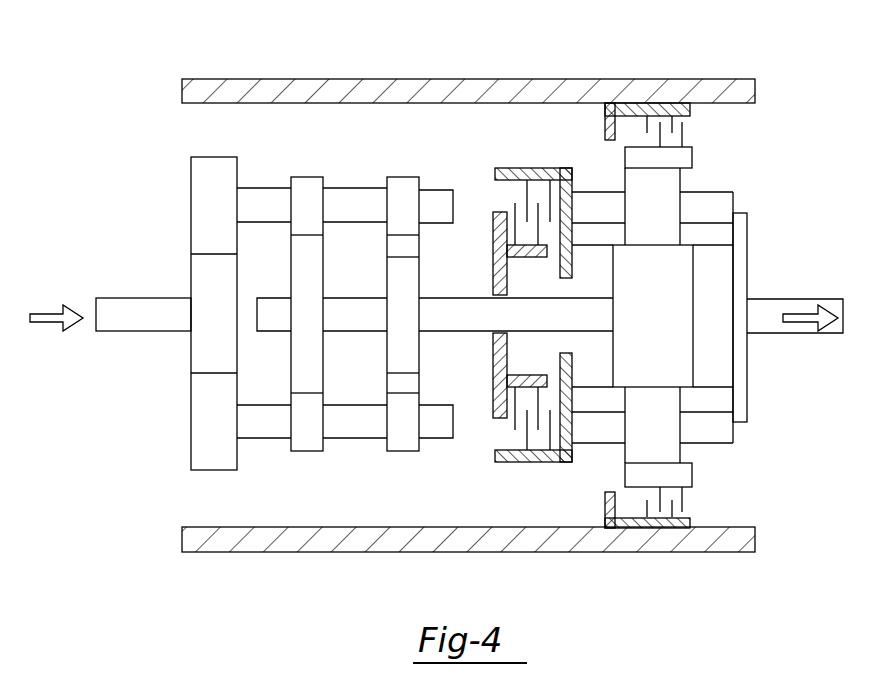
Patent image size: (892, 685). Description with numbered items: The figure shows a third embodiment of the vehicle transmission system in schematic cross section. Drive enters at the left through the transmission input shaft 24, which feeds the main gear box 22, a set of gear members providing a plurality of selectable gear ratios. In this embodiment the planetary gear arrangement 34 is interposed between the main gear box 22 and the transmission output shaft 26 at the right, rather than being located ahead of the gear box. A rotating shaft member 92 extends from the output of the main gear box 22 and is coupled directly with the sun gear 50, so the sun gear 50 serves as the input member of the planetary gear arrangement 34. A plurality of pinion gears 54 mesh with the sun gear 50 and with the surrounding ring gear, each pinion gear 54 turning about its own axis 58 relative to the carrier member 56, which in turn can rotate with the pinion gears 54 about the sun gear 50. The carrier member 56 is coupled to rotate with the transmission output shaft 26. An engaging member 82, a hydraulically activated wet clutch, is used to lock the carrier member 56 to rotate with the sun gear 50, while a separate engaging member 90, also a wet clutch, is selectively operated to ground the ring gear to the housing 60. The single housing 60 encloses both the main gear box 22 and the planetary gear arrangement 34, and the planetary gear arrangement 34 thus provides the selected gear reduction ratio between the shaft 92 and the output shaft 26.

The main gear box 22 is at (266, 145).
The transmission input shaft 24 is at (146, 324).
The transmission output shaft 26 is at (765, 328).
The planetary gear arrangement 34 is at (700, 48).
The sun gear 50 is at (658, 329).
The pinion gears 54 is at (659, 218).
The carrier member 56 is at (742, 268).
The pinion gear axis 58 is at (725, 431).
The housing 60 is at (300, 543).
The engaging member 82 is at (531, 262).
The engaging member 90 is at (633, 110).
The rotating shaft member 92 is at (473, 333).